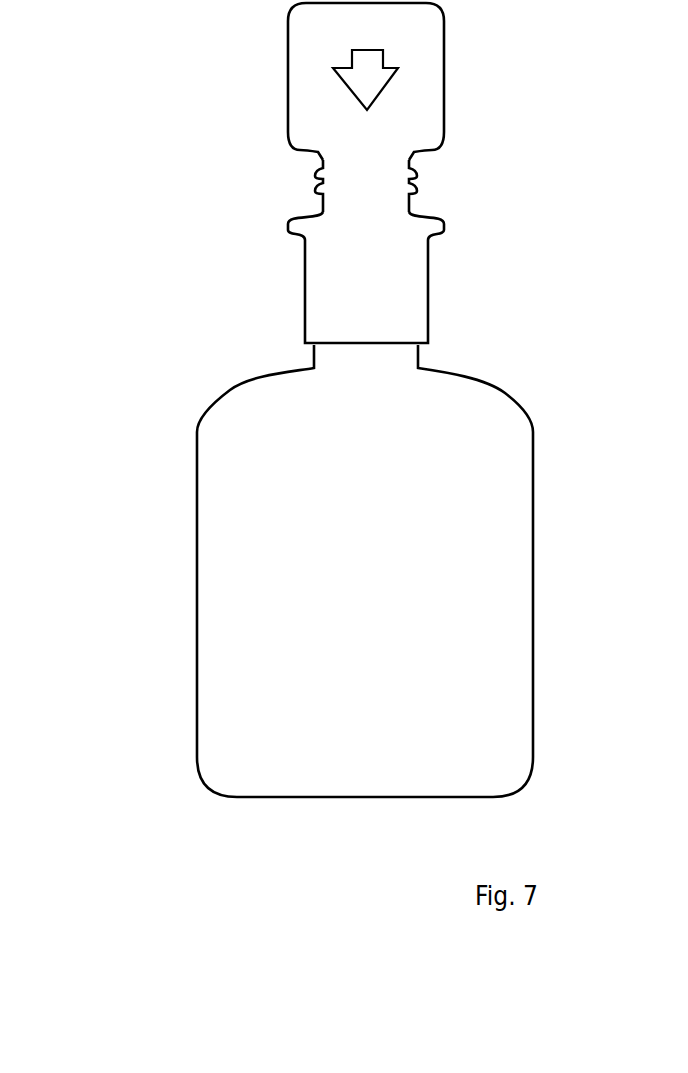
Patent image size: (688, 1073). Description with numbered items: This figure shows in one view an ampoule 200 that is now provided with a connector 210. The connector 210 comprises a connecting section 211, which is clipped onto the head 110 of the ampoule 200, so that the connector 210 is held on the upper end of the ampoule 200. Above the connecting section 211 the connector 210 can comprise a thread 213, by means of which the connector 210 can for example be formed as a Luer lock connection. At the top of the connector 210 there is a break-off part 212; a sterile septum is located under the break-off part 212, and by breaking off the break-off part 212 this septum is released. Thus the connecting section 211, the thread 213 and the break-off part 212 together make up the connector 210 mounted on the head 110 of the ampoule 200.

The ampoule 200 is at (319, 458).
The connector 210 is at (320, 173).
The break-off part 212 is at (405, 82).
The thread 213 is at (385, 185).
The connecting section 211 is at (387, 292).
The head 110 is at (410, 348).